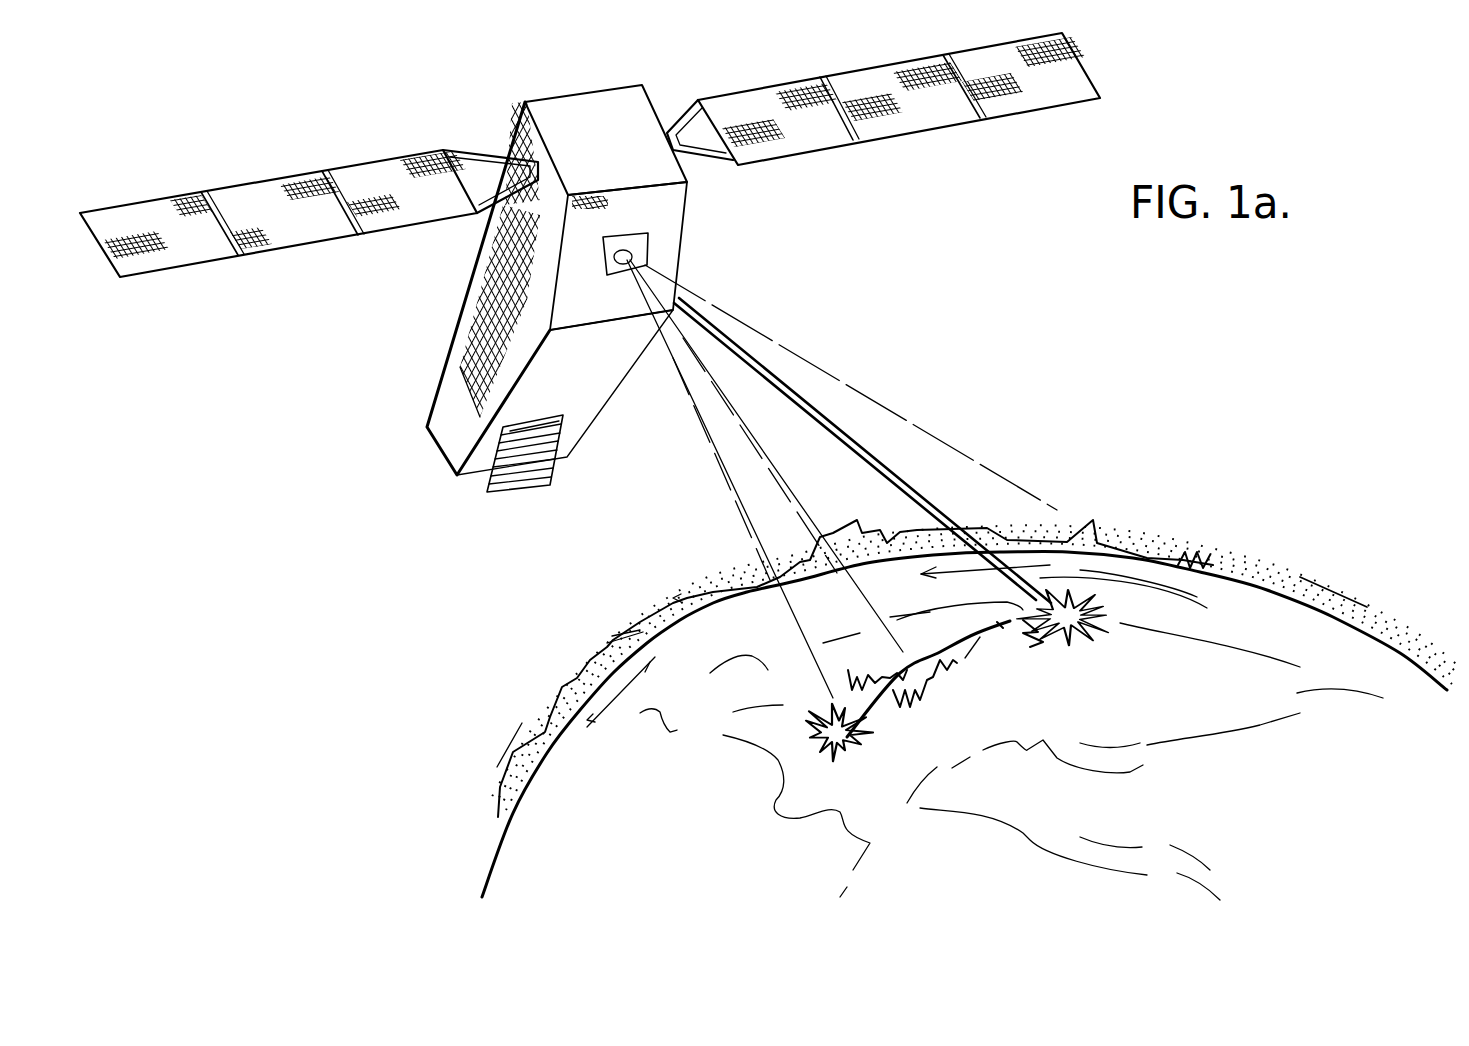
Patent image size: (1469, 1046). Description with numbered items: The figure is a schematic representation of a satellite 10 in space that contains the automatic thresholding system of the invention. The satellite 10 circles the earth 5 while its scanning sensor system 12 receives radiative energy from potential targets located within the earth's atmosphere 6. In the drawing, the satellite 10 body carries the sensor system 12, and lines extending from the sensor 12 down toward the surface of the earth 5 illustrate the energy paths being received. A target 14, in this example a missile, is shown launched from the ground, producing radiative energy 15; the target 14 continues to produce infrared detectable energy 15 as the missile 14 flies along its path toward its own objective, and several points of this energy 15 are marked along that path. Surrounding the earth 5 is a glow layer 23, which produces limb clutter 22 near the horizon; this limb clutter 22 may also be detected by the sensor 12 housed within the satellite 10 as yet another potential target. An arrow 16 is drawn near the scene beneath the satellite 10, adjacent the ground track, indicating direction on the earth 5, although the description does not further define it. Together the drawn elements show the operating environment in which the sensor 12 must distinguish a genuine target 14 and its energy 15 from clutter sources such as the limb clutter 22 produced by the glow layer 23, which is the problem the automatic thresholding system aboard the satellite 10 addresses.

The earth 5 is at (450, 861).
The earth's atmosphere 6 is at (563, 682).
The satellite 10 is at (685, 67).
The scanning sensor system 12 is at (635, 254).
The target 14 is at (1093, 624).
The radiative energy 15 is at (853, 735).
The scan direction 16 is at (997, 587).
The limb clutter 22 is at (1198, 552).
The glow layer 23 is at (985, 528).